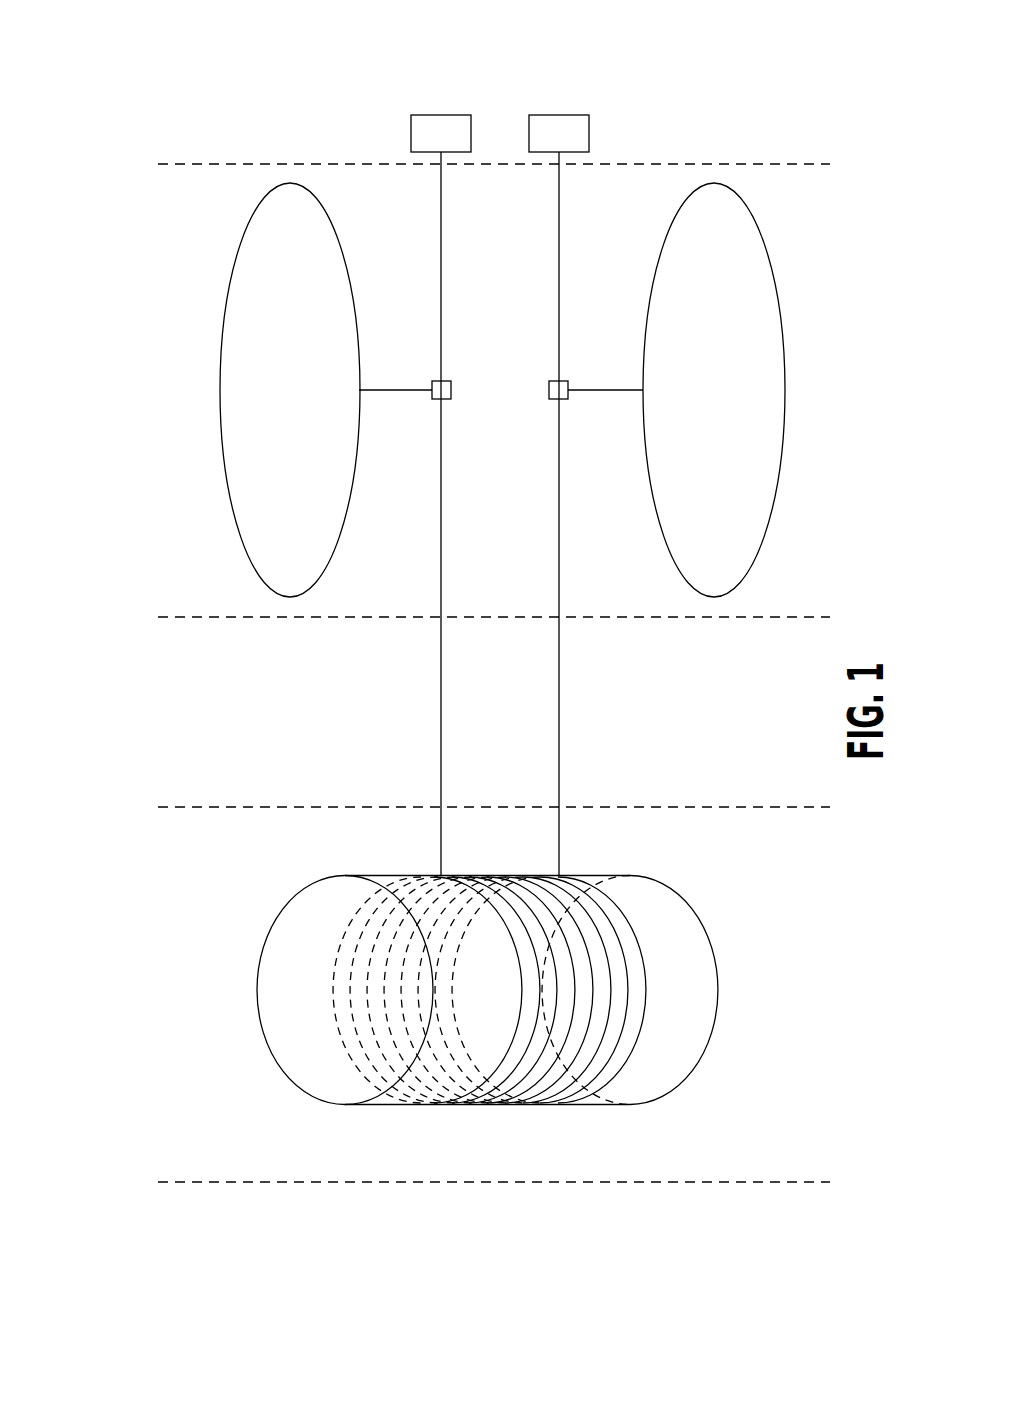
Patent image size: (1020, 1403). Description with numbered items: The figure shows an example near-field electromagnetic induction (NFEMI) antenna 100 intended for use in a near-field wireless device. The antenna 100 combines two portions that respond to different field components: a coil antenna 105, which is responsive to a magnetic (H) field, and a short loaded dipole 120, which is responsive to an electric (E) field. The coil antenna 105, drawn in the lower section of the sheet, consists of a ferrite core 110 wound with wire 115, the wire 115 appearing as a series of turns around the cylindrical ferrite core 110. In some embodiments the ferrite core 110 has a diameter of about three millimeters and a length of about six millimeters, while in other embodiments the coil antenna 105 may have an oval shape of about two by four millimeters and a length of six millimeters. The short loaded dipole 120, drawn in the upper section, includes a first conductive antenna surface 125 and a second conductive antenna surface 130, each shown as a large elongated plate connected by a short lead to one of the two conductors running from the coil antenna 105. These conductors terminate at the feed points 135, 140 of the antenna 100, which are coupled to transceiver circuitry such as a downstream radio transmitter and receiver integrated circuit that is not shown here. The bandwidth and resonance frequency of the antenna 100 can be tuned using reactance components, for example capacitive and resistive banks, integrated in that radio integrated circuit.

The near-field electromagnetic induction (NFEMI) antenna 100 is at (90, 1262).
The coil antenna 105 is at (136, 807).
The ferrite core 110 is at (270, 927).
The wire 115 is at (640, 1040).
The short loaded dipole 120 is at (136, 624).
The first conductive antenna surface 125 is at (220, 331).
The second conductive antenna surface 130 is at (650, 284).
The feed point 135 is at (430, 115).
The feed point 140 is at (570, 115).